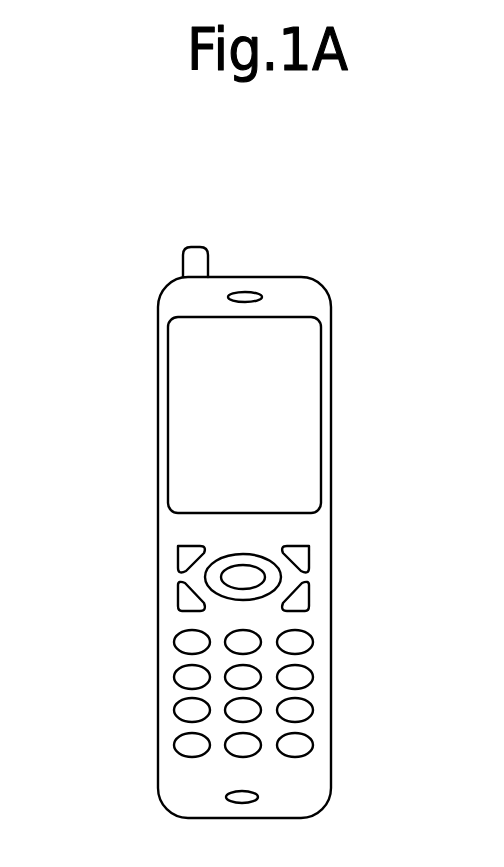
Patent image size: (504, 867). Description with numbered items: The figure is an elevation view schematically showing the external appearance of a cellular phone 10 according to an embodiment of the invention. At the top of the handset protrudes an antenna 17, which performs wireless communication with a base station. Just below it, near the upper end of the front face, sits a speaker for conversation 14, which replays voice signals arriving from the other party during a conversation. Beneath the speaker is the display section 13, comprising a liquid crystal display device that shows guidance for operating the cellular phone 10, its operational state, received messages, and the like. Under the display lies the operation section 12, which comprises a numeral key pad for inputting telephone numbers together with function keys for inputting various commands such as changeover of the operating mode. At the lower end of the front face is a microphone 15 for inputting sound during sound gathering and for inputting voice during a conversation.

The cellular phone 10 is at (317, 198).
The operation section 12 is at (313, 628).
The display section 13 is at (163, 363).
The speaker for conversation 14 is at (258, 296).
The microphone 15 is at (228, 796).
The antenna 17 is at (193, 247).